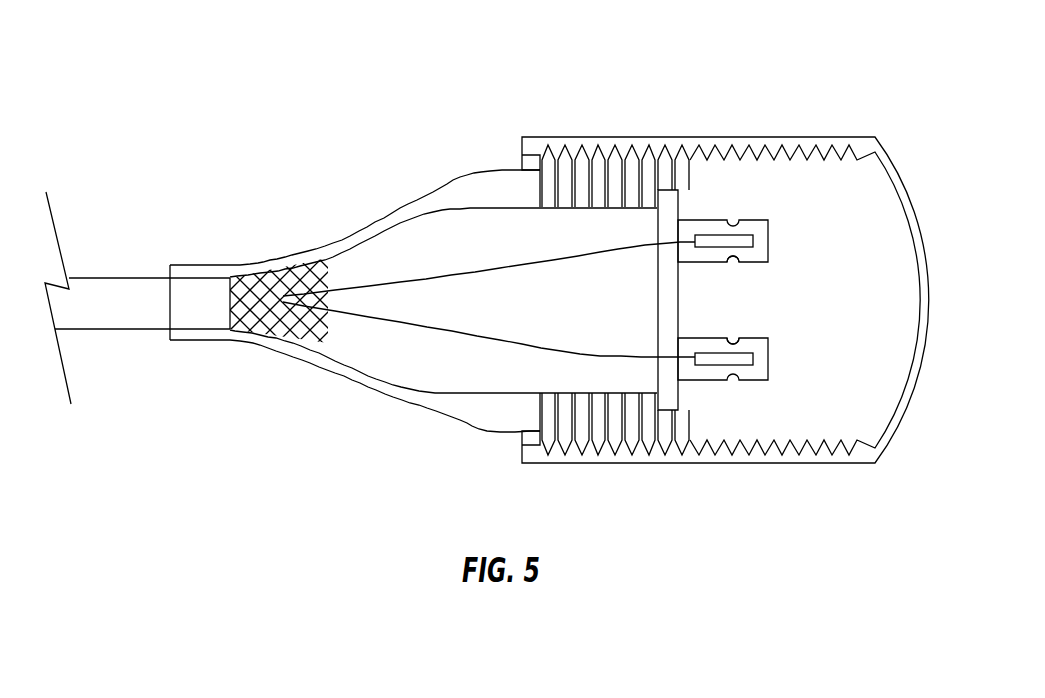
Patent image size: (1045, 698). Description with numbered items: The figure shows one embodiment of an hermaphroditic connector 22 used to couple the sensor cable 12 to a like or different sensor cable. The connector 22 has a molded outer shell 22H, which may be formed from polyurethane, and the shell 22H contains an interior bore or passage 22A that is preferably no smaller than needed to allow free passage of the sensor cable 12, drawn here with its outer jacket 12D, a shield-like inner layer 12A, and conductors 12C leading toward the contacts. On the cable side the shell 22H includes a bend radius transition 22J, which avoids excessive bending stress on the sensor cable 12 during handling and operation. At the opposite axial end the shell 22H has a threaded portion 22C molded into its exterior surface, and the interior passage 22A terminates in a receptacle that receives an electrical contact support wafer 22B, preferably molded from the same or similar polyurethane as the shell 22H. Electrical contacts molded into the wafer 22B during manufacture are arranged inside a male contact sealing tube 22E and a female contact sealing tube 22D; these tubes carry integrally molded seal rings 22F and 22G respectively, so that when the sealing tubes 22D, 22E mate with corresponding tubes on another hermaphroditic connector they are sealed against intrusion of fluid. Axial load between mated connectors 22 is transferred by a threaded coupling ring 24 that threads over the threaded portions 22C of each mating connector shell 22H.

The hermaphroditic connector 22 is at (276, 60).
The threaded coupling ring 24 is at (625, 137).
The interior bore or passage 22A is at (465, 394).
The electrical contact support wafer 22B is at (681, 197).
The threaded portion 22C is at (686, 431).
The female contact sealing tube 22D is at (772, 357).
The male contact sealing tube 22E is at (772, 242).
The seal ring 22F is at (735, 266).
The seal ring 22G is at (735, 336).
The molded outer shell 22H is at (485, 171).
The bend radius transition 22J is at (297, 252).
The sensor cable 12 is at (147, 322).
The braided shield 12A is at (270, 322).
The conductors 12C is at (392, 320).
The cable jacket 12D is at (146, 277).